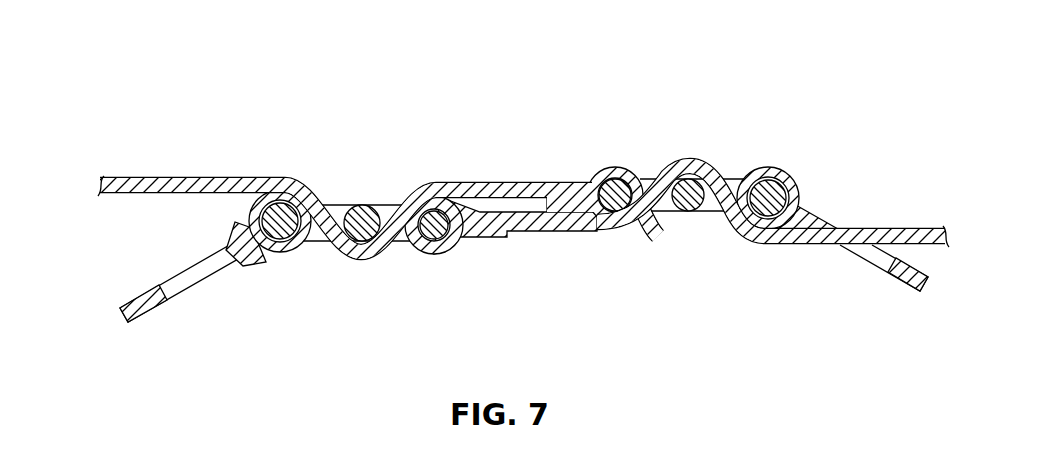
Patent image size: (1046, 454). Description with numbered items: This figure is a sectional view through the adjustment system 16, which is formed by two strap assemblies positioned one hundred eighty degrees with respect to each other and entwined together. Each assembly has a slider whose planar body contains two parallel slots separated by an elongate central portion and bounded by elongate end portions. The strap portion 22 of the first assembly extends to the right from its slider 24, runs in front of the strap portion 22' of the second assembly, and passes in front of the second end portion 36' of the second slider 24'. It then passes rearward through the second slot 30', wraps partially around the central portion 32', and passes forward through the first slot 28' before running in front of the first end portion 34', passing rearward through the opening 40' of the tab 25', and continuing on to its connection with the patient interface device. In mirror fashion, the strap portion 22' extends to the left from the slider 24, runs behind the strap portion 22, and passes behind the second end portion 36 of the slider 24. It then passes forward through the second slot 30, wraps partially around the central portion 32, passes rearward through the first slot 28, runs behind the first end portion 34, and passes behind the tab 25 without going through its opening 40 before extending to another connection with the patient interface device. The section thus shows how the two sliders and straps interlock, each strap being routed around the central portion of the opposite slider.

The adjustment system 16 is at (507, 131).
The strap portion 22 is at (773, 194).
The strap portion 22' is at (345, 224).
The slider 24 is at (376, 191).
The slider 24' is at (701, 232).
The tab 25 is at (164, 282).
The tab 25' is at (884, 292).
The first slot 28 is at (298, 261).
The first slot 28' is at (743, 147).
The second slot 30 is at (345, 247).
The second slot 30' is at (773, 170).
The central portion 32 is at (341, 293).
The central portion 32' is at (704, 153).
The first end portion 34 is at (255, 221).
The first end portion 34' is at (775, 175).
The second end portion 36 is at (501, 249).
The second end portion 36' is at (622, 178).
The opening 40 is at (211, 242).
The opening 40' is at (834, 209).